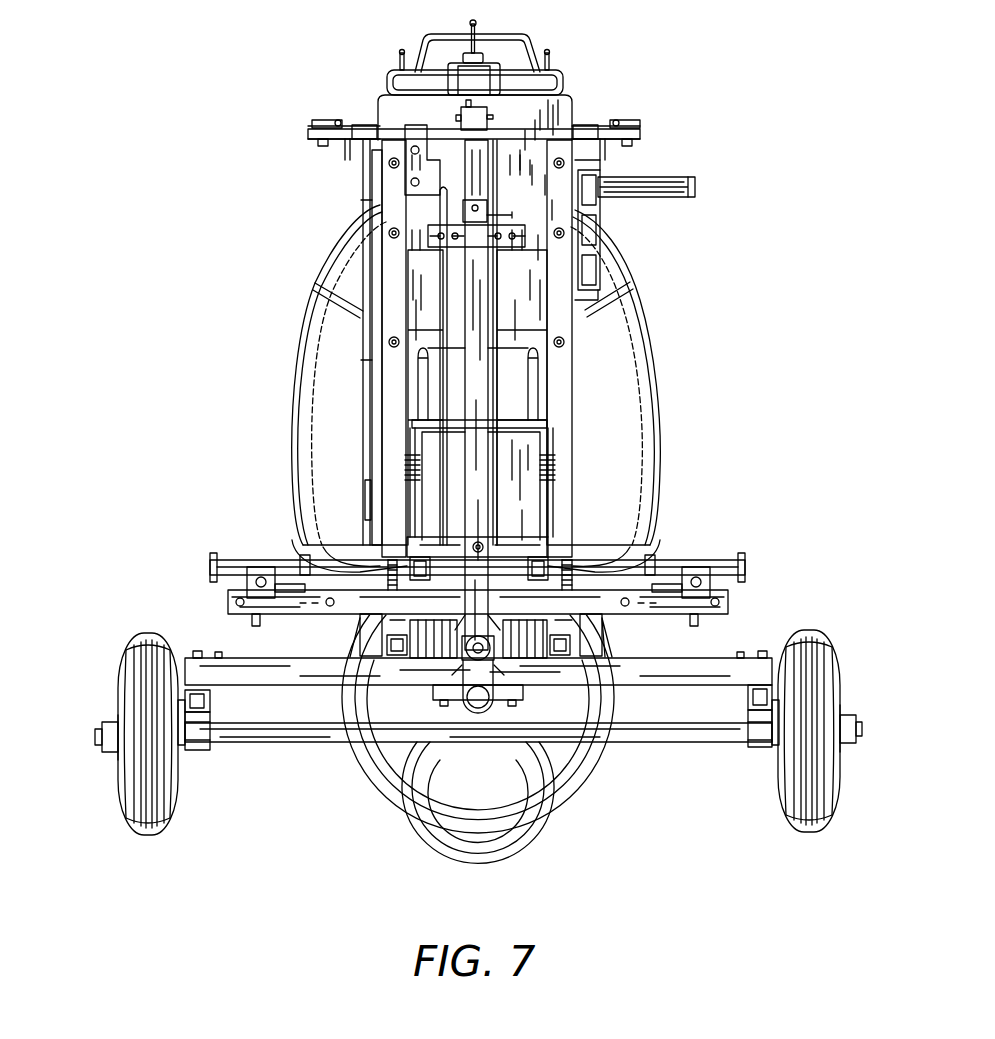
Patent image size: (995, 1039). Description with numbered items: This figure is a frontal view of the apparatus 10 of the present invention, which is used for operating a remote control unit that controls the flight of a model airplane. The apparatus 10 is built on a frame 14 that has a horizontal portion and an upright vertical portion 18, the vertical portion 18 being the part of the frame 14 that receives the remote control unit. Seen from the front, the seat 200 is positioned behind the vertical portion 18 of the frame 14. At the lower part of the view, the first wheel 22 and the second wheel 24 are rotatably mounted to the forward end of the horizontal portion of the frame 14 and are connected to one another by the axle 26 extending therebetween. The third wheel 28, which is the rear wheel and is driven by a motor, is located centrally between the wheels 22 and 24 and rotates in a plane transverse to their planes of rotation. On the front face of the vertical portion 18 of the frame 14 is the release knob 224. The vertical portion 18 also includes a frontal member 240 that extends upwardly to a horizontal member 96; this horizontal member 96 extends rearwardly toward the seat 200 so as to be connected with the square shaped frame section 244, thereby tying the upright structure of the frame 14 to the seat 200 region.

The apparatus 10 is at (693, 457).
The frame 14 is at (233, 658).
The vertical portion 18 is at (560, 363).
The first wheel 22 is at (820, 630).
The second wheel 24 is at (137, 633).
The axle 26 is at (707, 740).
The third wheel 28 is at (570, 790).
The horizontal member 96 is at (477, 237).
The seat 200 is at (630, 385).
The release knob 224 is at (478, 660).
The frontal member 240 is at (475, 333).
The square shaped frame section 244 is at (393, 428).